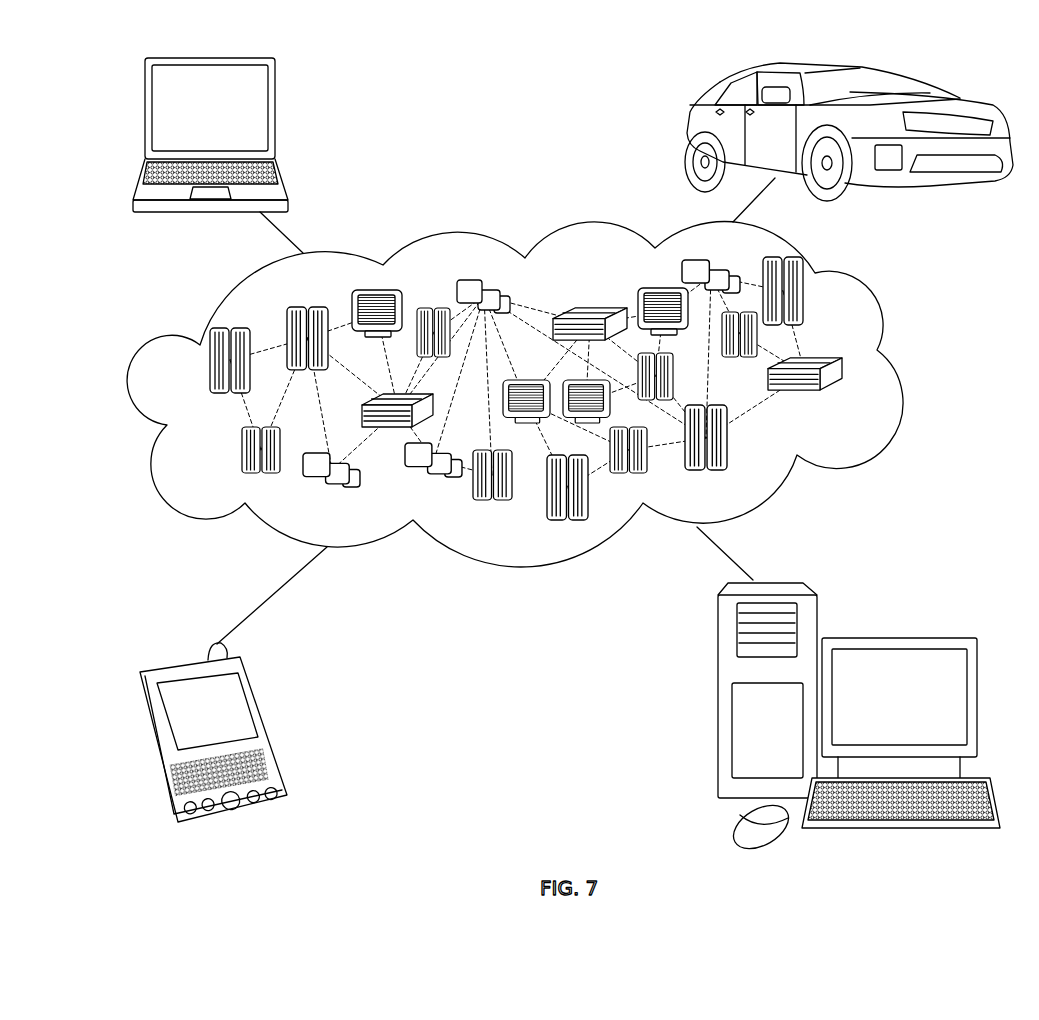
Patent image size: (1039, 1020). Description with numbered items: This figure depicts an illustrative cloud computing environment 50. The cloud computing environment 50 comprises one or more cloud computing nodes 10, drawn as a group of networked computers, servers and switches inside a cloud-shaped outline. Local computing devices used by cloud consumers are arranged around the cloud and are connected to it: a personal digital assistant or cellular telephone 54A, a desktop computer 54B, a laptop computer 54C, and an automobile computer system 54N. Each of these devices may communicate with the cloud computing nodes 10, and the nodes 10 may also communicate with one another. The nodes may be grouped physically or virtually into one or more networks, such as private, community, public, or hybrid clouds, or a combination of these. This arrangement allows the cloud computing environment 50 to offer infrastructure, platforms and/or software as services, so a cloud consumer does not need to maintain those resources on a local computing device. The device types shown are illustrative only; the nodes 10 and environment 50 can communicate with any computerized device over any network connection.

The cloud computing node 10 is at (842, 396).
The cloud computing environment 50 is at (895, 372).
The personal digital assistant or cellular telephone 54A is at (269, 722).
The desktop computer 54B is at (898, 637).
The laptop computer 54C is at (276, 118).
The automobile computer system 54N is at (692, 132).